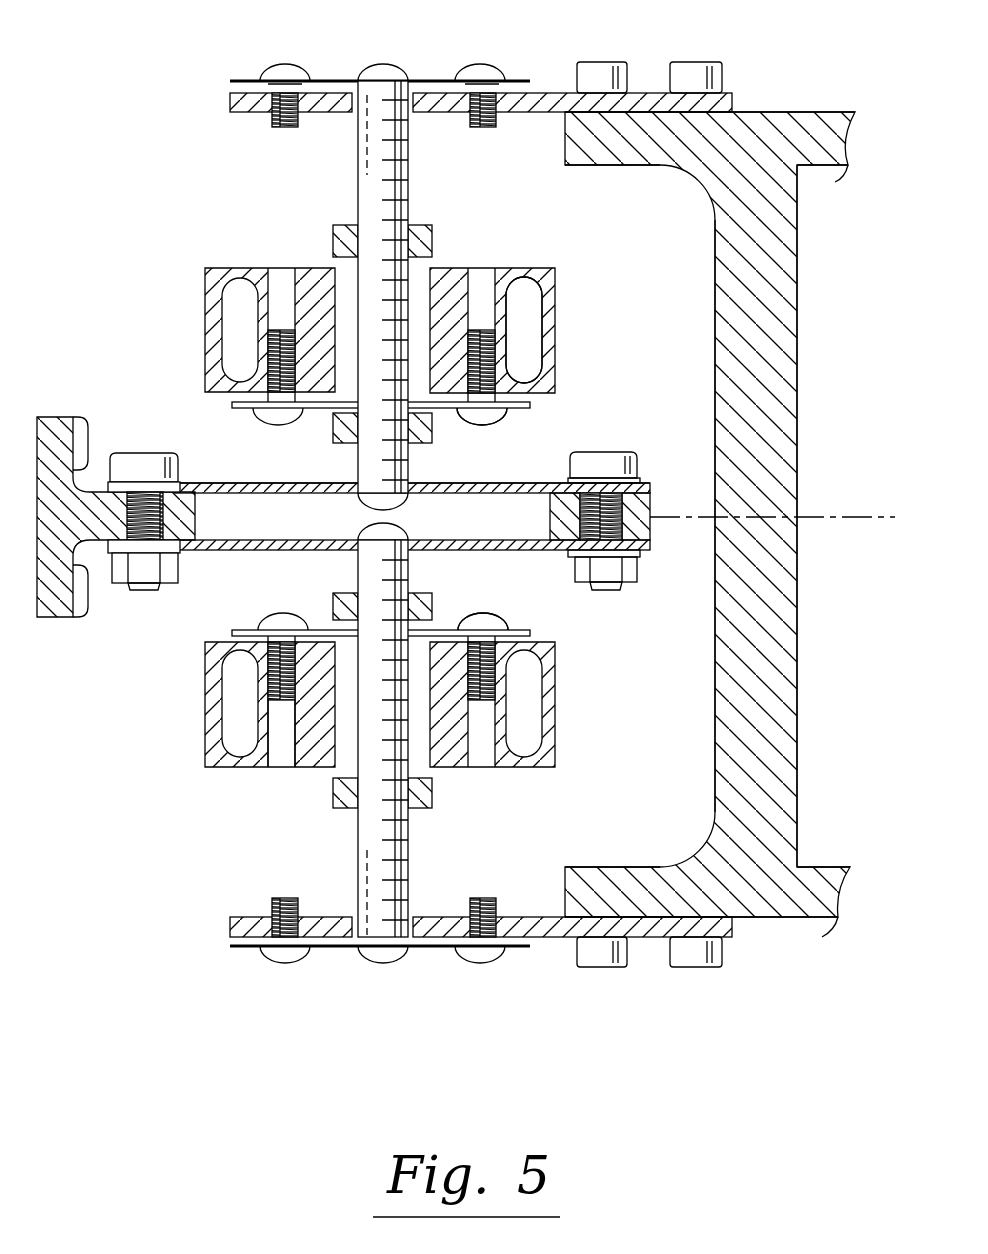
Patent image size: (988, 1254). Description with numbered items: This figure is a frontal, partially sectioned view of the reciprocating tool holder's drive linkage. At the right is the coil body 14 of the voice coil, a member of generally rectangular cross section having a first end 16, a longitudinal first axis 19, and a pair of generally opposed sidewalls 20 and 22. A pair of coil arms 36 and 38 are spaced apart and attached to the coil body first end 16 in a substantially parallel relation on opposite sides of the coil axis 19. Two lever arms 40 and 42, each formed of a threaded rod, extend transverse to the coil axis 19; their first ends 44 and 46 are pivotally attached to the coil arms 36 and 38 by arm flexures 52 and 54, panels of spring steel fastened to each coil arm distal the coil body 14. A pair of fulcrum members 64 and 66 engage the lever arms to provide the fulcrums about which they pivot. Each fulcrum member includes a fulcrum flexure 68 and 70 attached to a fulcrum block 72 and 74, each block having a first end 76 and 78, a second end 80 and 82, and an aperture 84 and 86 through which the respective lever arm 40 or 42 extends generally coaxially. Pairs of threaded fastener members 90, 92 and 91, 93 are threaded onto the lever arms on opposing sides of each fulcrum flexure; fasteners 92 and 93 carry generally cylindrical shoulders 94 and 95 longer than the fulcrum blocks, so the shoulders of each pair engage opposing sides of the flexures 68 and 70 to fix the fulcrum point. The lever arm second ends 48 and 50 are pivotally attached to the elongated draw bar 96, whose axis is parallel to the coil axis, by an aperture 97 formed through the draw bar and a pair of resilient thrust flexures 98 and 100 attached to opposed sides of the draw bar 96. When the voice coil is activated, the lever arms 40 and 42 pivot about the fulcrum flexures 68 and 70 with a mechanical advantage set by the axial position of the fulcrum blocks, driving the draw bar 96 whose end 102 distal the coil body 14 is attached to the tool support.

The coil body 14 is at (830, 110).
The first end 16 is at (714, 681).
The longitudinal first axis 19 is at (838, 517).
The sidewall 20 is at (778, 920).
The sidewall 22 is at (757, 110).
The coil arm 36 is at (557, 92).
The coil arm 38 is at (550, 945).
The lever arm 40 is at (395, 295).
The lever arm 42 is at (421, 733).
The first end 44 is at (378, 96).
The first end 46 is at (377, 943).
The second end 48 is at (363, 483).
The second end 50 is at (355, 552).
The arm flexure 52 is at (320, 80).
The arm flexure 54 is at (322, 948).
The fulcrum member 64 is at (436, 305).
The fulcrum member 66 is at (412, 727).
The fulcrum flexure 68 is at (240, 410).
The fulcrum flexure 70 is at (232, 634).
The fulcrum block 72 is at (552, 356).
The fulcrum block 74 is at (557, 690).
The first end 76 is at (525, 268).
The first end 78 is at (214, 768).
The second end 80 is at (545, 407).
The second end 82 is at (545, 645).
The aperture 84 is at (333, 268).
The aperture 86 is at (425, 747).
The threaded fastener member 90 is at (433, 441).
The threaded fastener member 91 is at (433, 598).
The threaded fastener member 92 is at (342, 227).
The threaded fastener member 93 is at (432, 806).
The shoulder 94 is at (418, 282).
The shoulder 95 is at (353, 710).
The draw bar 96 is at (653, 500).
The aperture 97 is at (550, 525).
The thrust flexure 98 is at (497, 483).
The thrust flexure 100 is at (195, 545).
The draw bar end 102 is at (37, 455).